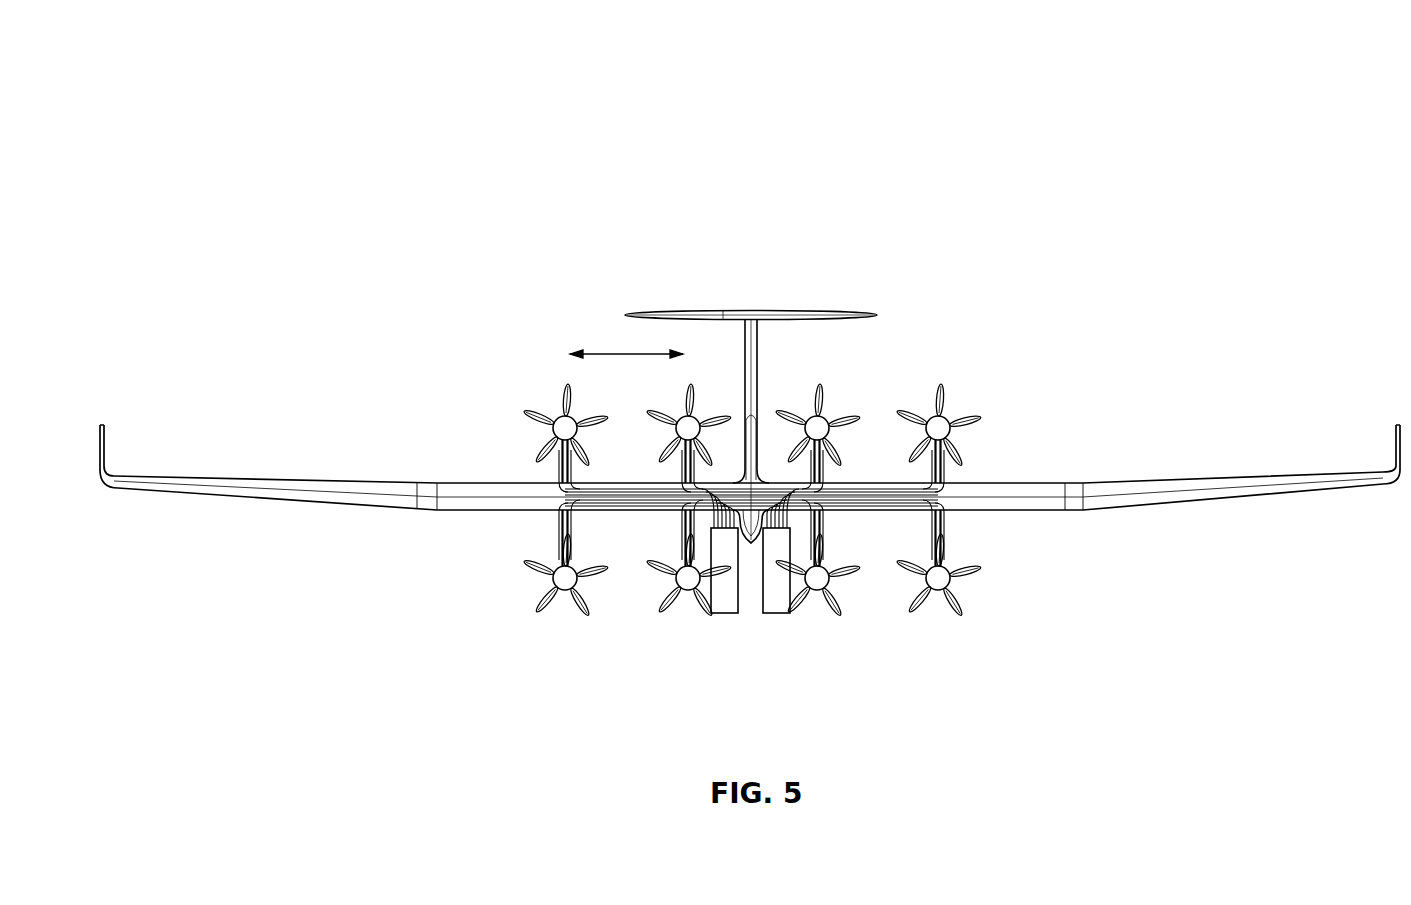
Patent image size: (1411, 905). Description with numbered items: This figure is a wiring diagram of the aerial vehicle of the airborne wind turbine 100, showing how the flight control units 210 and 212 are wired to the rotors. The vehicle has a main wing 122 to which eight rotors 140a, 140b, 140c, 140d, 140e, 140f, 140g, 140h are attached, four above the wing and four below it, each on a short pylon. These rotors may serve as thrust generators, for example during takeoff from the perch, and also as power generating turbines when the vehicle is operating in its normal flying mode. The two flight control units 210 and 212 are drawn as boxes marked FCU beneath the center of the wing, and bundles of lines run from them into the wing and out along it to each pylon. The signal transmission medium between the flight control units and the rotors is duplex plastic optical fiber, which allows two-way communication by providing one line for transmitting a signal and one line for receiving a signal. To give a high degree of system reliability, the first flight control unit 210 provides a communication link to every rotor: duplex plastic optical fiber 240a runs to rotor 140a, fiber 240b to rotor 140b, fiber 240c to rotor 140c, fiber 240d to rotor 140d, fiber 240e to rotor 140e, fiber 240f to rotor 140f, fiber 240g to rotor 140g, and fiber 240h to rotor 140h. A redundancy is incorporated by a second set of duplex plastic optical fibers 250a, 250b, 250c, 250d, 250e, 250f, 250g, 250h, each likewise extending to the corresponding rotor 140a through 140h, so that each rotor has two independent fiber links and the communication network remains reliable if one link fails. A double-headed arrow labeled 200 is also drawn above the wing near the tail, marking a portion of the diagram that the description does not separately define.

The airborne wind turbine 100 is at (980, 108).
The main wing 122 is at (1040, 482).
The rotor 140a is at (563, 580).
The rotor 140b is at (563, 423).
The rotor 140c is at (685, 580).
The rotor 140d is at (686, 424).
The rotor 140e is at (818, 582).
The rotor 140f is at (822, 428).
The rotor 140g is at (947, 582).
The rotor 140h is at (942, 426).
The flight control system 200 is at (622, 348).
The first flight control unit 210 is at (732, 614).
The flight control unit 212 is at (777, 614).
The duplex plastic optical fiber 240a is at (563, 527).
The duplex plastic optical fiber 240b is at (593, 490).
The duplex plastic optical fiber 240c is at (692, 512).
The duplex plastic optical fiber 240d is at (693, 470).
The duplex plastic optical fiber 240e is at (820, 512).
The duplex plastic optical fiber 240f is at (824, 482).
The duplex plastic optical fiber 240g is at (945, 518).
The duplex plastic optical fiber 240h is at (946, 482).
The duplex plastic optical fiber 250a is at (567, 520).
The duplex plastic optical fiber 250b is at (595, 492).
The duplex plastic optical fiber 250c is at (685, 537).
The duplex plastic optical fiber 250d is at (712, 482).
The duplex plastic optical fiber 250e is at (820, 535).
The duplex plastic optical fiber 250f is at (820, 472).
The duplex plastic optical fiber 250g is at (946, 530).
The duplex plastic optical fiber 250h is at (944, 465).